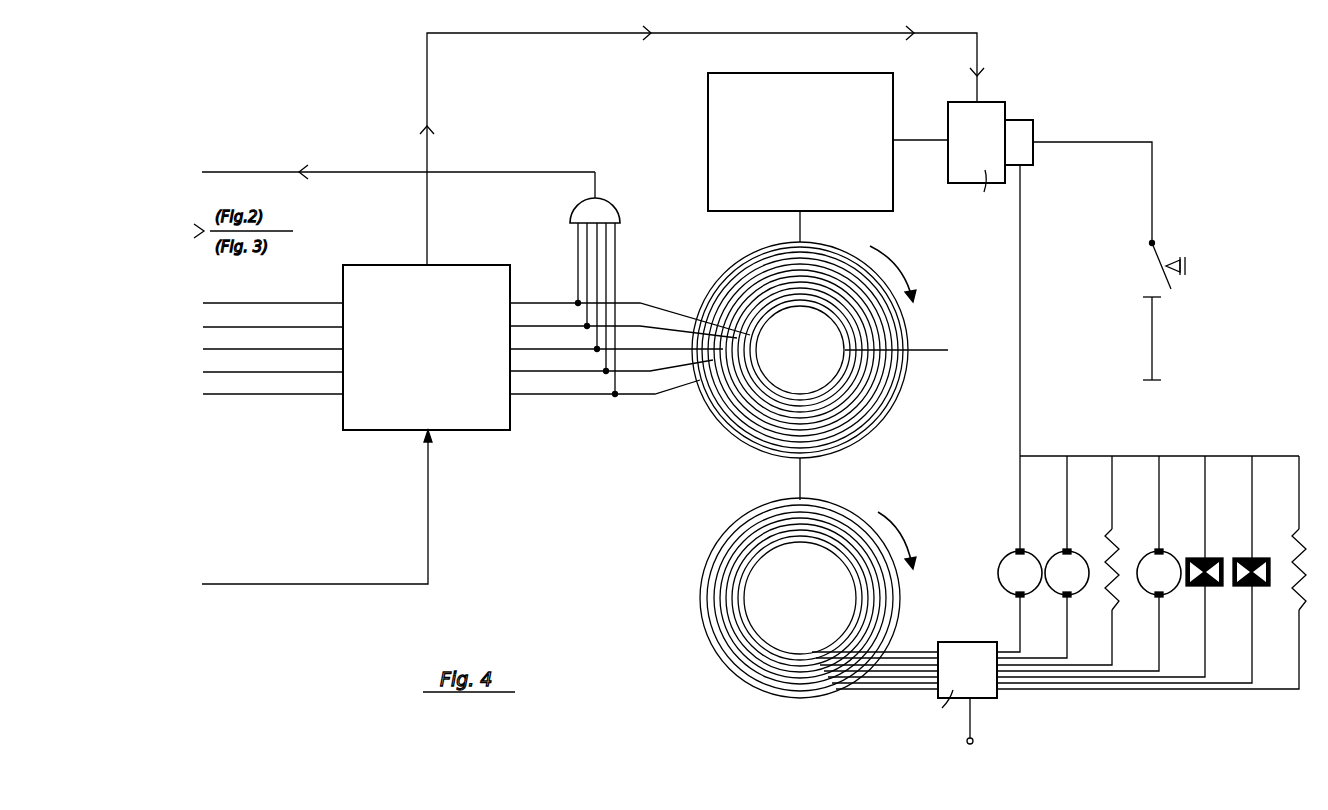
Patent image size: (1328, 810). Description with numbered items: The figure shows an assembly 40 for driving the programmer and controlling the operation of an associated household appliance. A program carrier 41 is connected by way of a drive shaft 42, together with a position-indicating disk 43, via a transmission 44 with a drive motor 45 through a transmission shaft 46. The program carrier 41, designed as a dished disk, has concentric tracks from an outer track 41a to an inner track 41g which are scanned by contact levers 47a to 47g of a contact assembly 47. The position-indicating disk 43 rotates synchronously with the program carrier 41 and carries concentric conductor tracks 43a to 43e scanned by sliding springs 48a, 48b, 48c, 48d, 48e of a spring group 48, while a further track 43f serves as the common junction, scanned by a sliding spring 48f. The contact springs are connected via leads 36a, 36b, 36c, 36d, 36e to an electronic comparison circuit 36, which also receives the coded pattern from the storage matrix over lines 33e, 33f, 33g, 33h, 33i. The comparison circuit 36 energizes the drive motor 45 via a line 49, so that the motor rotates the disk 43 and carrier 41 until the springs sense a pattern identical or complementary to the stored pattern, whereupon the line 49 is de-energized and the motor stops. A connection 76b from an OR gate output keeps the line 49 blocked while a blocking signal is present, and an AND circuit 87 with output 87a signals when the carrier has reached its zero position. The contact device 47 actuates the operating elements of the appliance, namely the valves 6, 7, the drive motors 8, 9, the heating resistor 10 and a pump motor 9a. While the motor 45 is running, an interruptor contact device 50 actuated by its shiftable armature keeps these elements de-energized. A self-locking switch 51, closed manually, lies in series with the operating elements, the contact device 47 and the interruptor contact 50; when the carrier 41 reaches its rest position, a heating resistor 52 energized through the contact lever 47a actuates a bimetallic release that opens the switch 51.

The valve 6 is at (1193, 556).
The valve 7 is at (1243, 556).
The drive motor 8 is at (1015, 550).
The drive motor 9 is at (1062, 550).
The pump motor 9a is at (1153, 550).
The resistor 10 is at (1100, 545).
The line from storage matrix 33e is at (266, 302).
The line from storage matrix 33f is at (266, 326).
The line from storage matrix 33g is at (266, 348).
The line from storage matrix 33h is at (266, 371).
The line from storage matrix 33i is at (266, 393).
The electronic comparison circuit 36 is at (398, 292).
The lead 36a is at (571, 302).
The lead 36b is at (571, 325).
The lead 36c is at (571, 348).
The lead 36d is at (571, 370).
The lead 36e is at (571, 393).
The assembly 40 is at (620, 496).
The program carrier 41 is at (705, 612).
The concentric track 41a is at (717, 650).
The concentric track 41g is at (747, 612).
The drive shaft 42 is at (806, 226).
The position-indicating disk 43 is at (907, 385).
The conductor track 43a is at (763, 392).
The conductor track 43e is at (732, 276).
The conductor track 43f is at (759, 367).
The transmission 44 is at (722, 114).
The drive motor 45 is at (997, 112).
The transmission shaft 46 is at (907, 140).
The contact assembly 47 is at (986, 690).
The contact lever 47a is at (885, 691).
The contact lever 47g is at (915, 650).
The sliding springs 48 is at (660, 419).
The sliding spring 48a is at (622, 304).
The sliding spring 48b is at (622, 327).
The sliding spring 48c is at (622, 349).
The sliding spring 48d is at (622, 372).
The sliding spring 48e is at (622, 395).
The sliding spring 48f is at (896, 338).
The line 49 is at (429, 90).
The contact device 50 is at (1025, 138).
The self-locking switch 51 is at (1160, 243).
The heating resistor 52 is at (1284, 533).
The connection 76b is at (317, 507).
The AND circuit 87 is at (612, 216).
The output of AND circuit 87a is at (557, 170).